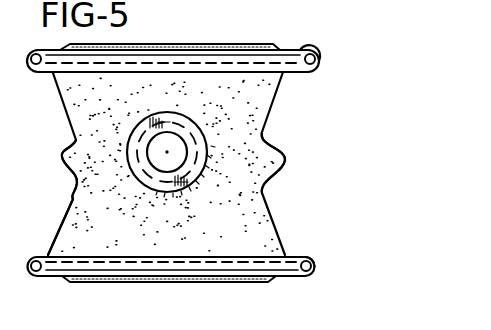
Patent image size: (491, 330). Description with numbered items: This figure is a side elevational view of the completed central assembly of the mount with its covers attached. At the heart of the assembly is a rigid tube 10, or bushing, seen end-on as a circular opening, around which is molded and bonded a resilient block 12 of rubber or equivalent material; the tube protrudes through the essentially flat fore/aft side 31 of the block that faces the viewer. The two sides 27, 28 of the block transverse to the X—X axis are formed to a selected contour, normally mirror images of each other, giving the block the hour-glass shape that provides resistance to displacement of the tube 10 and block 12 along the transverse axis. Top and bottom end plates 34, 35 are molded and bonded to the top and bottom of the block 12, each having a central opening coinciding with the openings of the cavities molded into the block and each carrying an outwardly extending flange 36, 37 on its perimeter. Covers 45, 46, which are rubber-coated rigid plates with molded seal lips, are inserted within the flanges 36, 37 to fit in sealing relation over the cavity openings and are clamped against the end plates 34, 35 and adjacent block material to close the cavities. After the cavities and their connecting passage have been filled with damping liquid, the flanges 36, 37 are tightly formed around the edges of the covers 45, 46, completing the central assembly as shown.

The tube 10 is at (189, 147).
The resilient block 12 is at (95, 111).
The side of the block 27 is at (73, 200).
The side of the block 28 is at (262, 195).
The fore/aft side of the block 31 is at (82, 147).
The end plate 34 is at (293, 68).
The end plate 35 is at (286, 254).
The flange 36 is at (318, 51).
The flange 37 is at (316, 266).
The cover 45 is at (232, 44).
The cover 46 is at (214, 283).